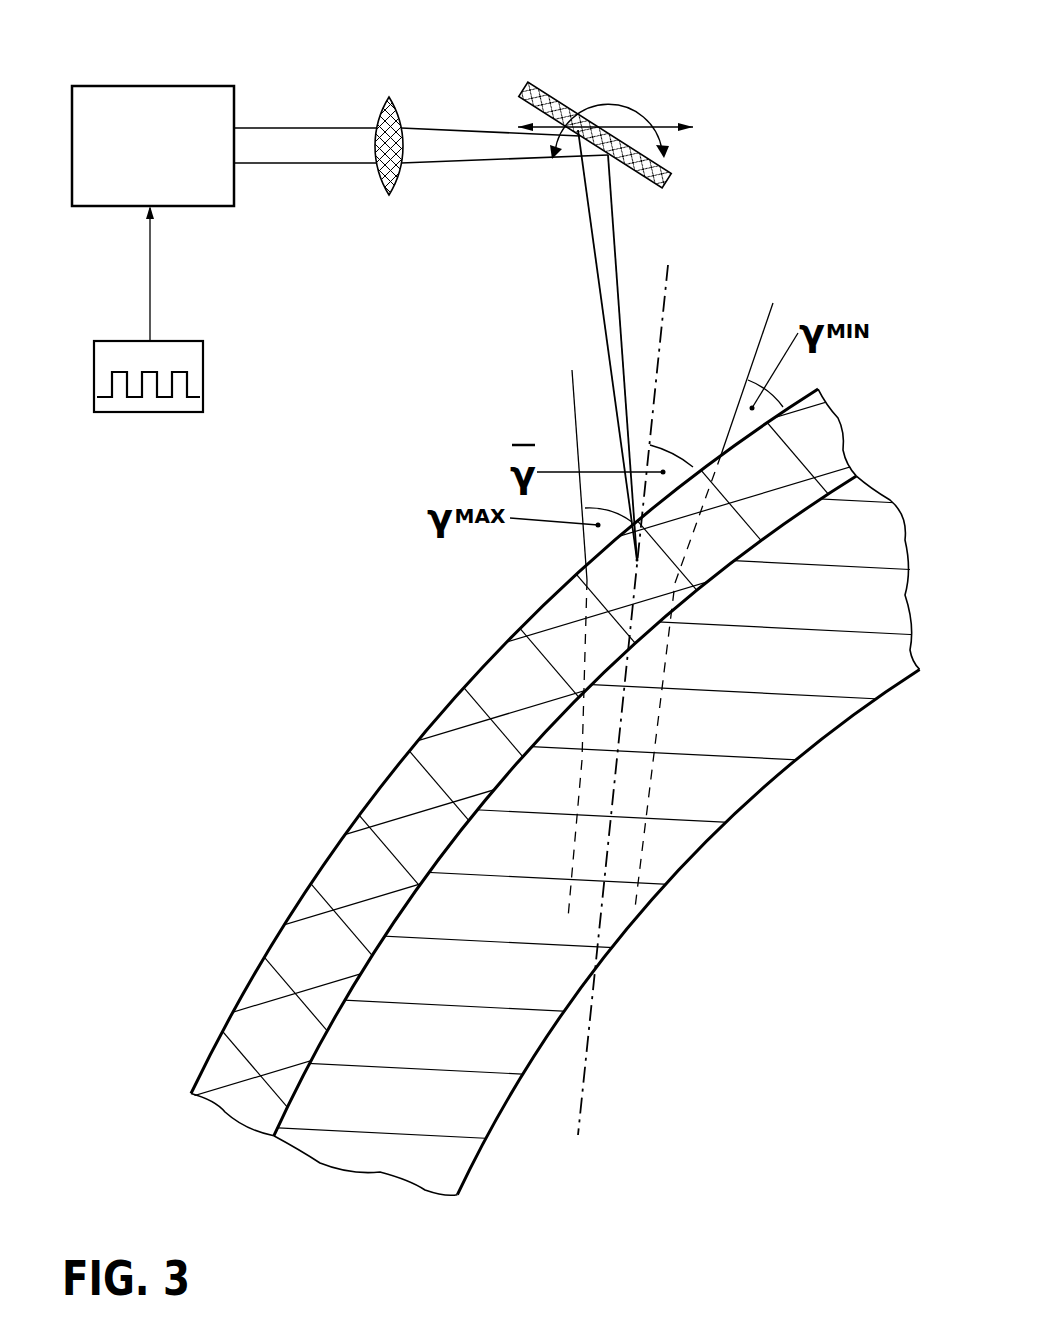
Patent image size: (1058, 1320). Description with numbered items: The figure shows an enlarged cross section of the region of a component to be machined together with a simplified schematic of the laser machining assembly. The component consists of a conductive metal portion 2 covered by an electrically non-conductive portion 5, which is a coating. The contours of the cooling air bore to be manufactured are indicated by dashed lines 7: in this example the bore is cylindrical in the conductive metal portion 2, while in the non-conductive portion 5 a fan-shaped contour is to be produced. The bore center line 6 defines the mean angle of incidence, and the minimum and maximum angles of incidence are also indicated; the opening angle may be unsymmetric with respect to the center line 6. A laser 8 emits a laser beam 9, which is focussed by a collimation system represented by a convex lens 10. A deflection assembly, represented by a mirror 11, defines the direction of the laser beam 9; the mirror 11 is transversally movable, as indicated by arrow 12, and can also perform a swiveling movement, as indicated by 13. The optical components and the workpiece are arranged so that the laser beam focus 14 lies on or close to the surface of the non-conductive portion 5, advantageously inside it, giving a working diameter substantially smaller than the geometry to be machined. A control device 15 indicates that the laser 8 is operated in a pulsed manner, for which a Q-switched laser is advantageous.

The conductive metal portion 2 is at (733, 777).
The non-conductive portion 5 is at (333, 894).
The bore center line 6 is at (672, 277).
The dashed lines 7 is at (568, 918).
The laser 8 is at (159, 153).
The laser beam 9 is at (322, 146).
The convex lens 10 is at (390, 105).
The mirror 11 is at (545, 105).
The arrow 12 is at (667, 127).
The swiveling movement 13 is at (633, 117).
The laser beam focus 14 is at (635, 562).
The control device 15 is at (202, 362).